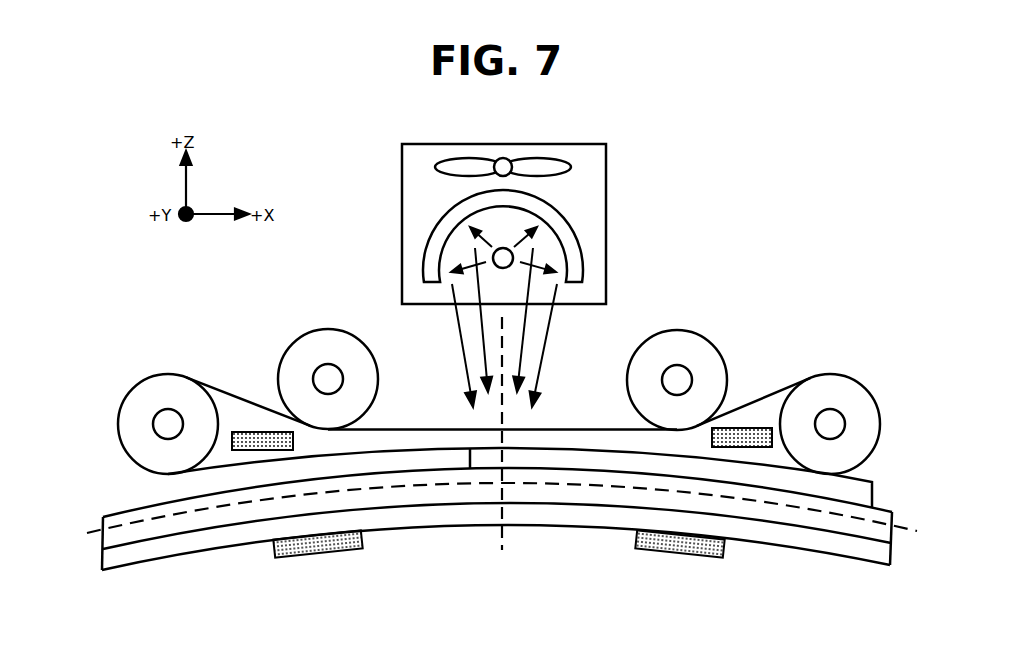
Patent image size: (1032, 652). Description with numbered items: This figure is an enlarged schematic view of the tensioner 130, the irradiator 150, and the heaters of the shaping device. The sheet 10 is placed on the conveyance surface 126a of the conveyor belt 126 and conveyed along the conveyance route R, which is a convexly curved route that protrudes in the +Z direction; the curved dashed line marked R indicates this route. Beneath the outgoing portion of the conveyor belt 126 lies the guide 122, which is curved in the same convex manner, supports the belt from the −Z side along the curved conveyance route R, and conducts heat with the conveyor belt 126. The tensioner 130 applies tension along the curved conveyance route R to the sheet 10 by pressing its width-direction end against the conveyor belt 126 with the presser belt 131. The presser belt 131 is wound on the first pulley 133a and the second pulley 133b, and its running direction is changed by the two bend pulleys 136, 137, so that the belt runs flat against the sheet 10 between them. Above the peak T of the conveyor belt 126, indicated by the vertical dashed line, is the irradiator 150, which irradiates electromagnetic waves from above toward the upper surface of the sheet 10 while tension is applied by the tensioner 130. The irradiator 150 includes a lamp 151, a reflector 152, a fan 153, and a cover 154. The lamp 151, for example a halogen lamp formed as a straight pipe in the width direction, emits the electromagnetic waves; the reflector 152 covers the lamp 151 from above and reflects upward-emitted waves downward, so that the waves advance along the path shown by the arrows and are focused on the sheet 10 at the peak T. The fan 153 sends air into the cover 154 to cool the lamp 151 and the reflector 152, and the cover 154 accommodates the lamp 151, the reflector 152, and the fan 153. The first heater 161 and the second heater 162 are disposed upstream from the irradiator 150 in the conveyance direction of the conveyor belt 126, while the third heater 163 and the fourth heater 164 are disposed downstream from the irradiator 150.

The sheet 10 is at (872, 494).
The guide 122 is at (100, 567).
The conveyor belt 126 is at (479, 545).
The conveyance surface 126a is at (127, 510).
The tensioner 130 is at (888, 370).
The presser belt 131 is at (435, 427).
The first pulley 133a is at (842, 388).
The second pulley 133b is at (160, 383).
The bend pulley 136 is at (695, 343).
The bend pulley 137 is at (330, 340).
The irradiator 150 is at (703, 188).
The lamp 151 is at (513, 253).
The reflector 152 is at (572, 223).
The fan 153 is at (562, 176).
The cover 154 is at (607, 162).
The first heater 161 is at (681, 553).
The second heater 162 is at (752, 437).
The third heater 163 is at (320, 553).
The fourth heater 164 is at (243, 433).
The conveyance route R is at (170, 517).
The peak T is at (502, 470).